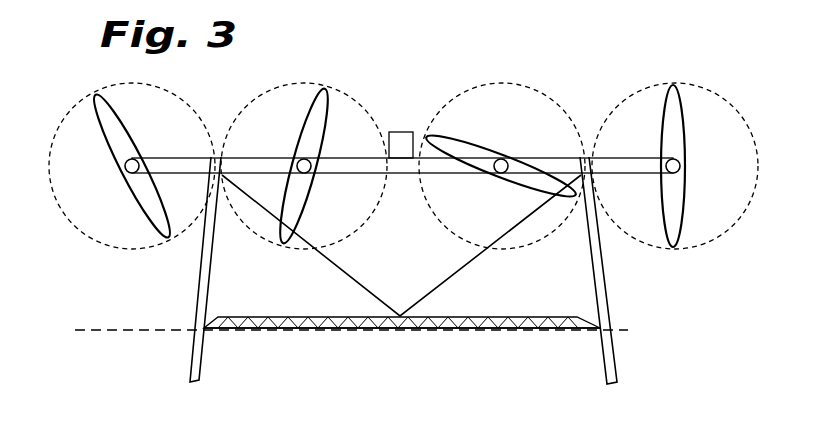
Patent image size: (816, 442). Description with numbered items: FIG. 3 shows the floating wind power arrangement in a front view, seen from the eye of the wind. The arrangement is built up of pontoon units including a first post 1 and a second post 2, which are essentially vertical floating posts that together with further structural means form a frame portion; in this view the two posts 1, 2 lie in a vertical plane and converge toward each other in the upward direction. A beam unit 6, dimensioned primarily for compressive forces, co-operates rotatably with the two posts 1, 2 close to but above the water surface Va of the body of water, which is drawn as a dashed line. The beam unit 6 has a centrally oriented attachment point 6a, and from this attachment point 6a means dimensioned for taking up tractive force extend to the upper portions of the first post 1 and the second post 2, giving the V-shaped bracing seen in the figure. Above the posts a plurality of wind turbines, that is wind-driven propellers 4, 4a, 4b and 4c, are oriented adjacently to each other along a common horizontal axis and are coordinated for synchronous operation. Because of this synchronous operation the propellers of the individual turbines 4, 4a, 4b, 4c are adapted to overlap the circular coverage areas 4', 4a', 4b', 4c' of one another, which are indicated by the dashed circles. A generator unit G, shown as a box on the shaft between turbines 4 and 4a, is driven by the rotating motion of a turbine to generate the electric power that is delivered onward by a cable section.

The first post 1 is at (203, 292).
The second post 2 is at (597, 245).
The wind turbine 4 is at (304, 139).
The wind turbine 4a is at (490, 130).
The wind turbine 4b is at (108, 146).
The wind turbine 4c is at (686, 141).
The circular coverage area 4' is at (304, 166).
The circular coverage area 4a' is at (502, 166).
The circular coverage area 4b' is at (132, 166).
The circular coverage area 4c' is at (675, 166).
The beam unit 6 is at (505, 317).
The centrally oriented attachment point 6a is at (403, 331).
The generator unit G is at (402, 143).
The water surface Va is at (145, 330).